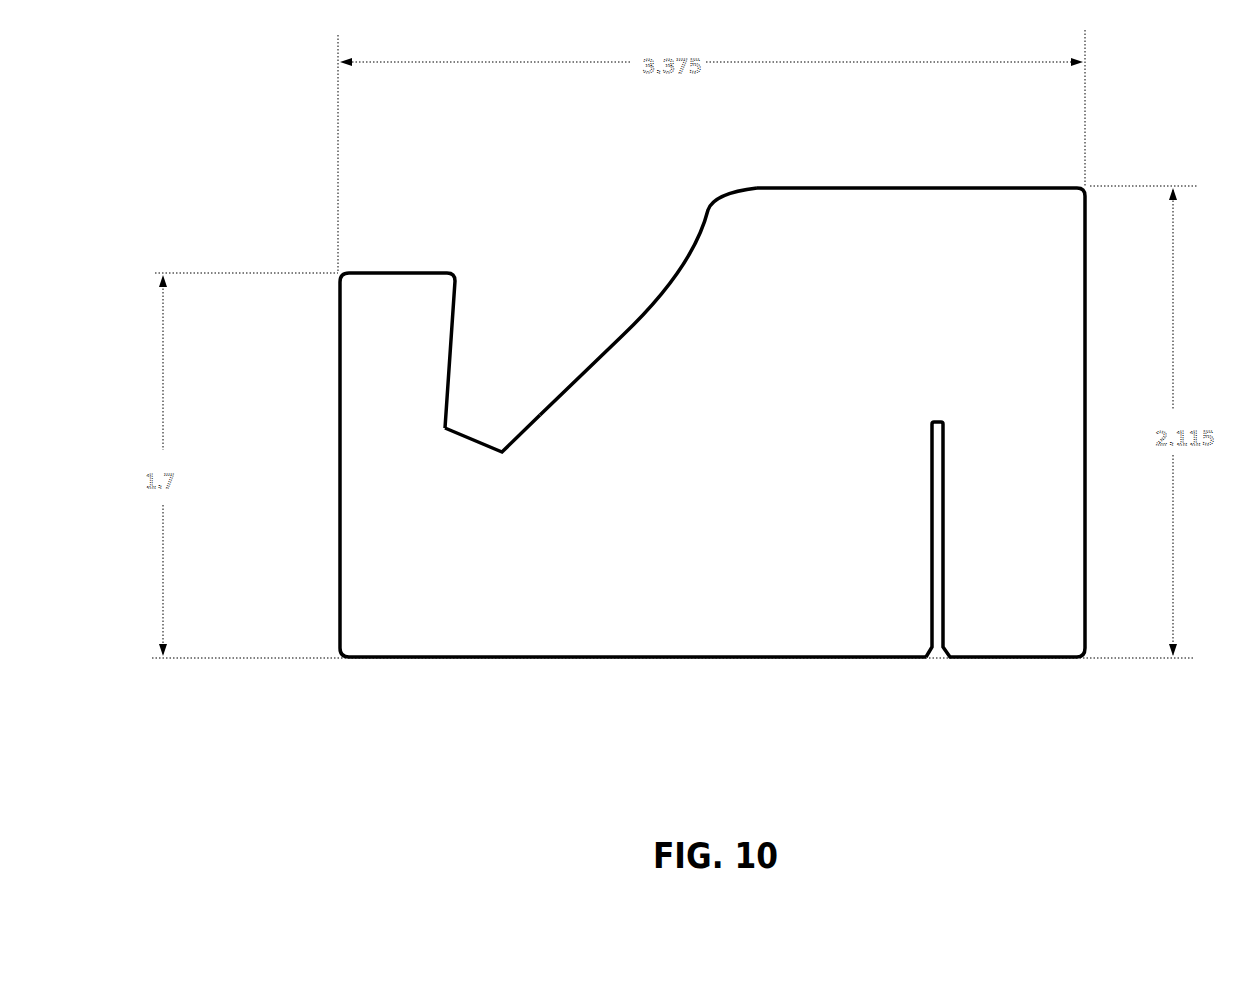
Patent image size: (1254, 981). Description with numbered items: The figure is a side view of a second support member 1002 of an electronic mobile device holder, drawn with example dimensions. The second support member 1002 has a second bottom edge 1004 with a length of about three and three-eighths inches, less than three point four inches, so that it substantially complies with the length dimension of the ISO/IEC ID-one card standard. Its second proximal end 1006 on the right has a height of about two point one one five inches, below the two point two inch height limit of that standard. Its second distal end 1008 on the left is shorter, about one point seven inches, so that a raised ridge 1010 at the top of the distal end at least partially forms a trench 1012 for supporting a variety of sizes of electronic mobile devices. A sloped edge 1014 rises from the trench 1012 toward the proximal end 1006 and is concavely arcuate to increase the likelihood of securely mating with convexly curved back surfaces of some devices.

The second support member 1002 is at (593, 648).
The second bottom edge 1004 is at (736, 671).
The second proximal end 1006 is at (1098, 311).
The second distal end 1008 is at (326, 386).
The raised ridge 1010 is at (373, 272).
The trench 1012 is at (525, 250).
The sloped edge 1014 is at (636, 302).